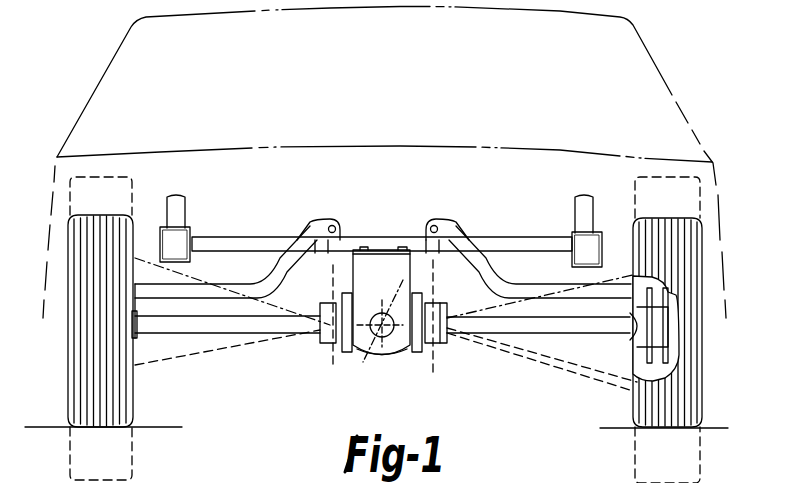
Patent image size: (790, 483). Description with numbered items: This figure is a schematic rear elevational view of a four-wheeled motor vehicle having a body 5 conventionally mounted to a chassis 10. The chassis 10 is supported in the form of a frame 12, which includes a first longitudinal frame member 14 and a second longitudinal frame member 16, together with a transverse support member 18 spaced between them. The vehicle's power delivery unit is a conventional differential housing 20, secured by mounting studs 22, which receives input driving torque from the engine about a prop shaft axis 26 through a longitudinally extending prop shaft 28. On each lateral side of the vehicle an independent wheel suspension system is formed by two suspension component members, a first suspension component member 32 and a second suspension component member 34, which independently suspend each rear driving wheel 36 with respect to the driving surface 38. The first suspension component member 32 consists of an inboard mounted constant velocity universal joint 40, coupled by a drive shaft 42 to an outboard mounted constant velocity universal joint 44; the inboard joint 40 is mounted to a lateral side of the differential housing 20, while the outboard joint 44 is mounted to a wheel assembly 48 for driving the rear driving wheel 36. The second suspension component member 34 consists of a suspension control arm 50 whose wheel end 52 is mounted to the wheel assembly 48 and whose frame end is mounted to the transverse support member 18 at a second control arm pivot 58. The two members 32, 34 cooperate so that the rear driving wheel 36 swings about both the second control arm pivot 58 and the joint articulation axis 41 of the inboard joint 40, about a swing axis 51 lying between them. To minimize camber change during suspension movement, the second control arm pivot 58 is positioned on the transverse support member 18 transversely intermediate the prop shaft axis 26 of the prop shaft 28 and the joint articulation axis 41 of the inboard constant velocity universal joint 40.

The body 5 is at (83, 103).
The chassis 10 is at (423, 173).
The frame 12 is at (507, 225).
The first longitudinal frame member 14 is at (190, 230).
The second longitudinal frame member 16 is at (600, 243).
The transverse support member 18 is at (262, 240).
The differential housing 20 is at (388, 351).
The mounting studs 22 is at (405, 238).
The prop shaft axis 26 is at (378, 340).
The prop shaft 28 is at (402, 284).
The first suspension component member 32 is at (200, 337).
The second suspension component member 34 is at (245, 276).
The rear driving wheel 36 is at (97, 215).
The driving surface 38 is at (160, 427).
The inboard mounted constant velocity universal joint 40 is at (325, 343).
The joint articulation axis 41 is at (332, 287).
The drive shaft 42 is at (230, 332).
The outboard mounted constant velocity universal joint 44 is at (626, 360).
The wheel assembly 48 is at (138, 253).
The suspension control arm 50 is at (272, 290).
The swing axis 51 is at (433, 363).
The wheel end 52 is at (570, 300).
The second control arm pivot 58 is at (333, 221).